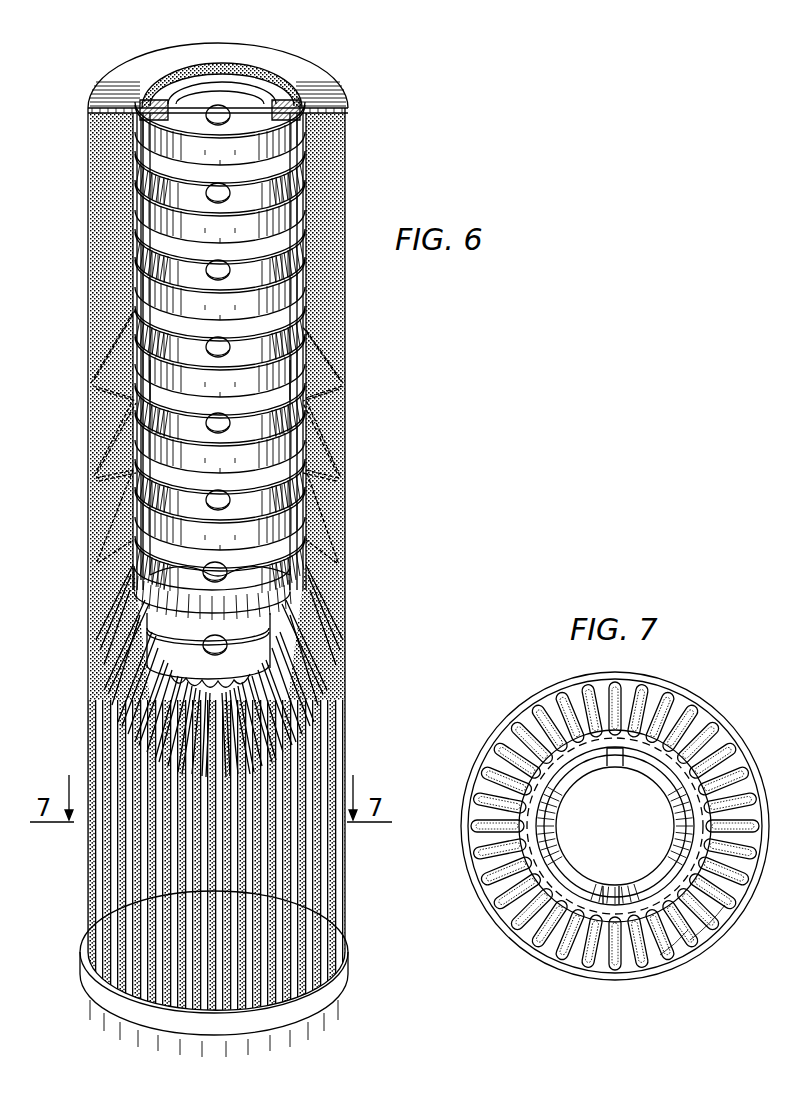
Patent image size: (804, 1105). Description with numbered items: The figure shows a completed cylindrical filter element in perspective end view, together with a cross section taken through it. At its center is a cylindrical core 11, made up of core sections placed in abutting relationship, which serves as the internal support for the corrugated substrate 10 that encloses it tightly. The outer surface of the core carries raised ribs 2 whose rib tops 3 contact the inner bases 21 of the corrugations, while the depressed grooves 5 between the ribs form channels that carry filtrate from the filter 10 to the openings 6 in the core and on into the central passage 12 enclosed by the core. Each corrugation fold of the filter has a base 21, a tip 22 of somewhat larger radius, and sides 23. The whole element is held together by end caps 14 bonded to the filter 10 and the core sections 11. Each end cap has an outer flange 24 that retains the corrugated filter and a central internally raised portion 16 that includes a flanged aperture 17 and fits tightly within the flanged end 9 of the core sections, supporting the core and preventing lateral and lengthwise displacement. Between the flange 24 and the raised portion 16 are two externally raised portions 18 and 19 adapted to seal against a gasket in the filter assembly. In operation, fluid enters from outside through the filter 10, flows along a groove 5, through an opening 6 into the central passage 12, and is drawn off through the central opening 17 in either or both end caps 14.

In FIG. 6, the ribs 2 is at (265, 313).
In FIG. 7, the ribs 2 is at (728, 918).
In FIG. 6, the rib tops 3 is at (306, 170).
In FIG. 7, the rib tops 3 is at (660, 702).
In FIG. 6, the grooves 5 is at (278, 366).
In FIG. 7, the grooves 5 is at (533, 812).
In FIG. 6, the openings 6 is at (220, 337).
In FIG. 7, the openings 6 is at (609, 763).
In FIG. 6, the flanged end 9 is at (133, 118).
In FIG. 6, the corrugated substrate 10 is at (316, 650).
In FIG. 7, the corrugated substrate 10 is at (665, 738).
In FIG. 6, the cylindrical core 11 is at (142, 567).
In FIG. 6, the central passage 12 is at (142, 292).
In FIG. 7, the central passage 12 is at (622, 732).
In FIG. 6, the end caps 14 is at (322, 80).
In FIG. 6, the central internally raised portion 16 is at (136, 126).
In FIG. 6, the flanged aperture 17 is at (248, 86).
In FIG. 7, the flanged aperture 17 is at (626, 840).
In FIG. 6, the externally raised portion 18 is at (206, 74).
In FIG. 6, the externally raised portion 19 is at (145, 100).
In FIG. 6, the base 21 is at (300, 236).
In FIG. 7, the base 21 is at (690, 870).
In FIG. 6, the tip 22 is at (307, 676).
In FIG. 7, the tip 22 is at (673, 960).
In FIG. 6, the sides 23 is at (185, 1010).
In FIG. 7, the sides 23 is at (703, 937).
In FIG. 6, the outer flange 24 is at (88, 113).